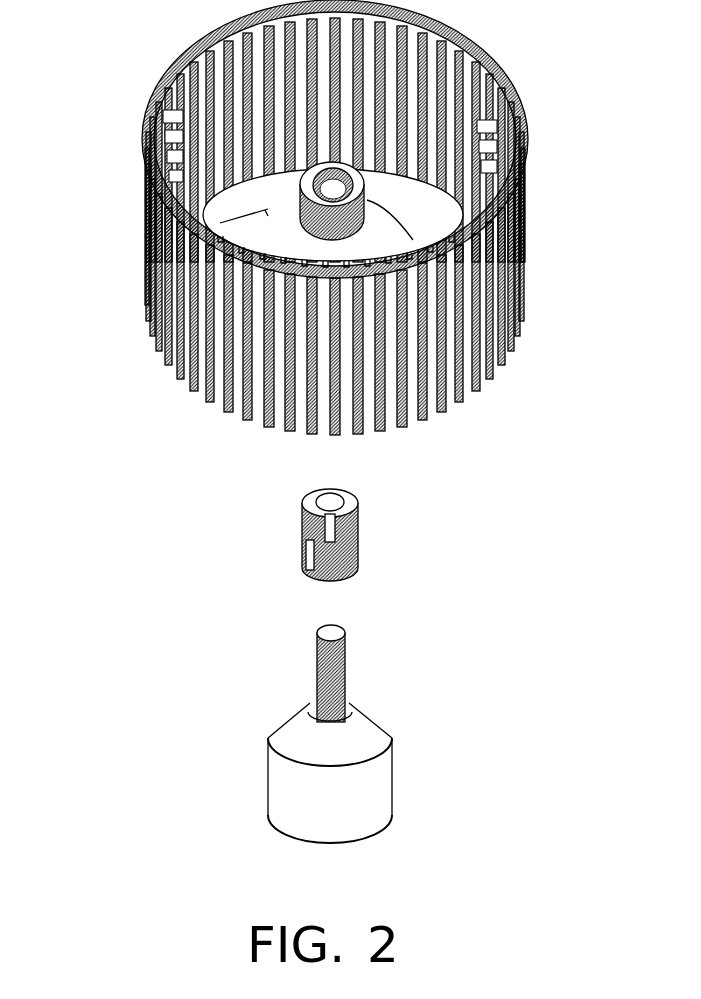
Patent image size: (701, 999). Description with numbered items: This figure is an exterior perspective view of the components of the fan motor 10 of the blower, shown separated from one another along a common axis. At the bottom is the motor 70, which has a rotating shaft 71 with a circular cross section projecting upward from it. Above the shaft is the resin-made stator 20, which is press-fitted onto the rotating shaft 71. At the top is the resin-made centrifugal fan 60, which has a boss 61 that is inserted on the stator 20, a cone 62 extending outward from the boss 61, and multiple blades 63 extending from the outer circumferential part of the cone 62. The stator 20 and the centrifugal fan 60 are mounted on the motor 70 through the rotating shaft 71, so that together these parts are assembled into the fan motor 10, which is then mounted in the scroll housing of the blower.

The fan motor 10 is at (84, 50).
The stator 20 is at (363, 518).
The centrifugal fan 60 is at (513, 90).
The boss 61 is at (520, 317).
The cone 62 is at (140, 182).
The blades 63 is at (184, 386).
The motor 70 is at (392, 790).
The rotating shaft 71 is at (345, 655).